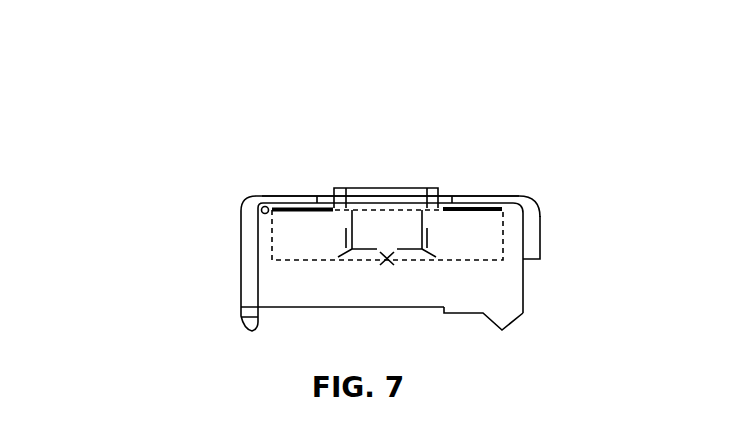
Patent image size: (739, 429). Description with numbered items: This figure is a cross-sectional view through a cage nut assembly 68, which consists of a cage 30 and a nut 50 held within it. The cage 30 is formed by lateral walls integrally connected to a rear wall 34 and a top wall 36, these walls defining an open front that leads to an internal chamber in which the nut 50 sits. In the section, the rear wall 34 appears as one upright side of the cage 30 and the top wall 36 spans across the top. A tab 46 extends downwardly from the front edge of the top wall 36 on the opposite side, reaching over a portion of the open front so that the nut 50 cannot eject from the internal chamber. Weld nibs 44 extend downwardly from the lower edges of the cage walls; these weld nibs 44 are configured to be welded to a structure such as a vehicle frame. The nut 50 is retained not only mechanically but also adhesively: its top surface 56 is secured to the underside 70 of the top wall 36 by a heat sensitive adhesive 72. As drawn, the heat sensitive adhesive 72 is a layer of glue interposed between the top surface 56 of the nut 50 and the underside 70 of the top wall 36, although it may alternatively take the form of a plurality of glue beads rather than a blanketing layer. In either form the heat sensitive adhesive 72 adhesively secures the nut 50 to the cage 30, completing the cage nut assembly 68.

The cage nut assembly 68 is at (155, 64).
The cage 30 is at (448, 150).
The underside of the top wall 70 is at (261, 212).
The top wall 36 is at (270, 196).
The heat sensitive adhesive 72 is at (292, 200).
The tab 46 is at (540, 230).
The nut 50 is at (302, 238).
The rear wall 34 is at (241, 245).
The top surface of the nut 56 is at (483, 211).
The weld nibs 44 is at (250, 333).